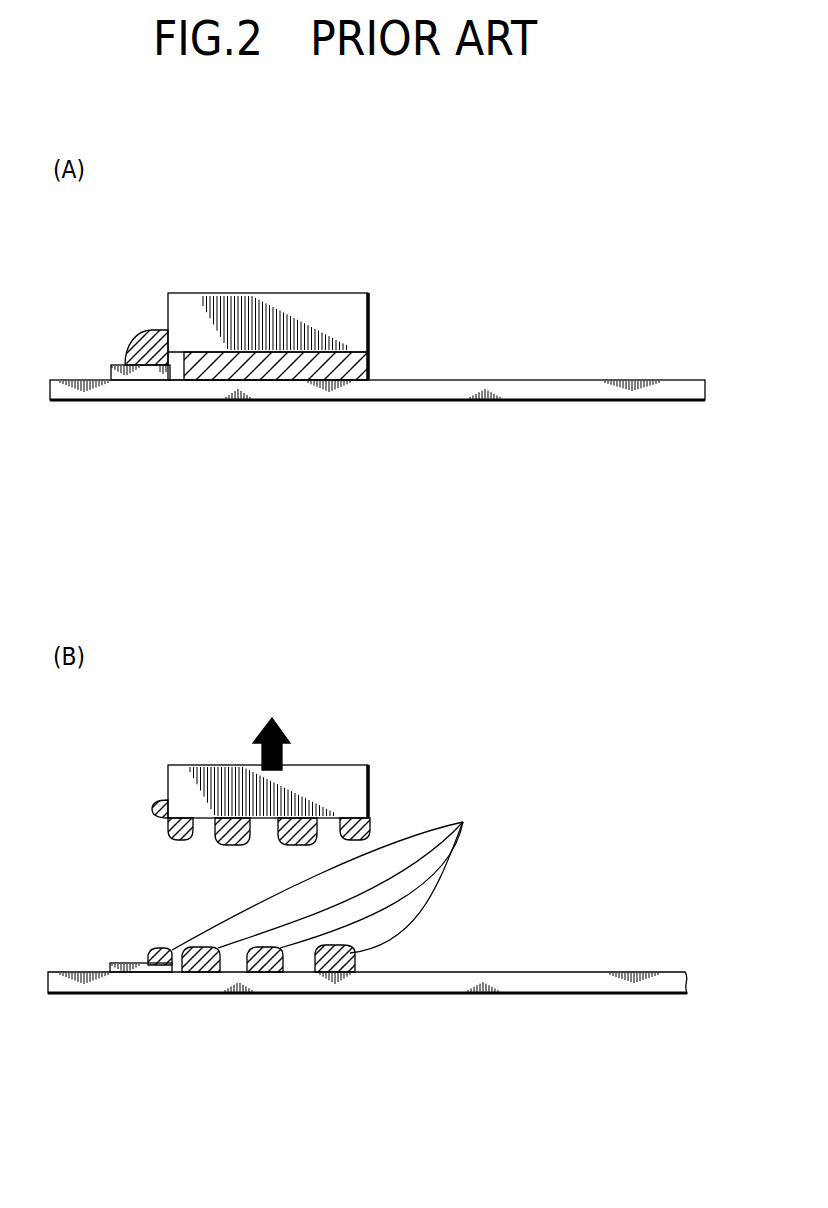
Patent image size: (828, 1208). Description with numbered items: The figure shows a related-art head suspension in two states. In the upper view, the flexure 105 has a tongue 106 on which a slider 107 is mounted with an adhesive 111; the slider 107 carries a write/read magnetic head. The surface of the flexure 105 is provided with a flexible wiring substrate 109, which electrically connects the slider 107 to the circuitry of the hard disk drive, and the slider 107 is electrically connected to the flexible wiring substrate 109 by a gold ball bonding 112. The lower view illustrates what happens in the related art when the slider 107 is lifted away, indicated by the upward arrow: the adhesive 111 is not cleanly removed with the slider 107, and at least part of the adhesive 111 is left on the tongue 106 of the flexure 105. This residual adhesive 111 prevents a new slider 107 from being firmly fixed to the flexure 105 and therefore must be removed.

In FIG. 2A, the flexure 105 is at (603, 388).
In FIG. 2B, the flexure 105 is at (610, 980).
In FIG. 2A, the tongue 106 is at (273, 394).
In FIG. 2B, the tongue 106 is at (278, 984).
In FIG. 2A, the slider 107 is at (333, 312).
In FIG. 2B, the slider 107 is at (332, 775).
In FIG. 2A, the flexible wiring substrate 109 is at (130, 382).
In FIG. 2B, the flexible wiring substrate 109 is at (137, 975).
In FIG. 2A, the adhesive 111 is at (373, 370).
In FIG. 2B, the adhesive 111 is at (330, 890).
In FIG. 2A, the gold ball bonding 112 is at (147, 335).